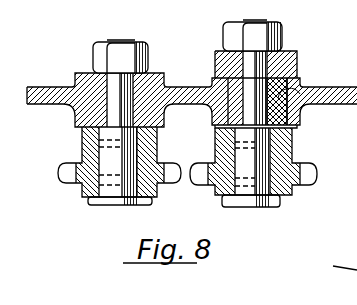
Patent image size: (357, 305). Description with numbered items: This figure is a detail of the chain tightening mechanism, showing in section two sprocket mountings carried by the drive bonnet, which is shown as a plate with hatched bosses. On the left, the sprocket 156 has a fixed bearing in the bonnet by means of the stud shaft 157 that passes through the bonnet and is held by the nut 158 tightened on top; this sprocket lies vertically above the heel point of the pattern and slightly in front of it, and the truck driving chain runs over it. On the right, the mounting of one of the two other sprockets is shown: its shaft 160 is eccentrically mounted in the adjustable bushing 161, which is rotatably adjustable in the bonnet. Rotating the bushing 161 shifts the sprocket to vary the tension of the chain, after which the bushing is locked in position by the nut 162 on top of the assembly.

The sprocket 156 is at (70, 176).
The stud shaft 157 is at (122, 200).
The nut 158 is at (143, 62).
The shaft 160 is at (252, 194).
The adjustable bushing 161 is at (283, 92).
The nut 162 is at (272, 38).